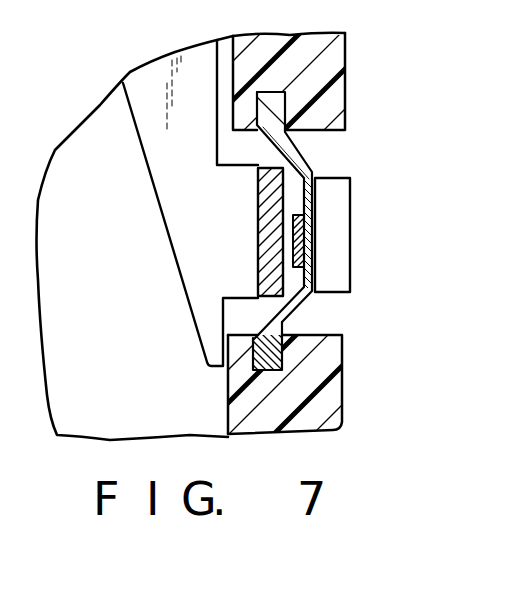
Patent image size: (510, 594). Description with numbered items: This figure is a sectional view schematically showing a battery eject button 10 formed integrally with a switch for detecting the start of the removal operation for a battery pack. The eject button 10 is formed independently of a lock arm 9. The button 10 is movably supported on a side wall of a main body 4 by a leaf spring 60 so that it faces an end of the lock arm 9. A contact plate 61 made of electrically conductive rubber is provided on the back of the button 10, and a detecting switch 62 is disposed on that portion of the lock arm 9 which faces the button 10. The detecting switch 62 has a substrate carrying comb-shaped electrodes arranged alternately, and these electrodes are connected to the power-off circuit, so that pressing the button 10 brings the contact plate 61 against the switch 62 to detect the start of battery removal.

The main body 4 is at (327, 400).
The lock arm 9 is at (159, 184).
The battery eject button 10 is at (345, 263).
The leaf spring 60 is at (298, 305).
The contact plate 61 is at (300, 214).
The detecting switch 62 is at (258, 246).